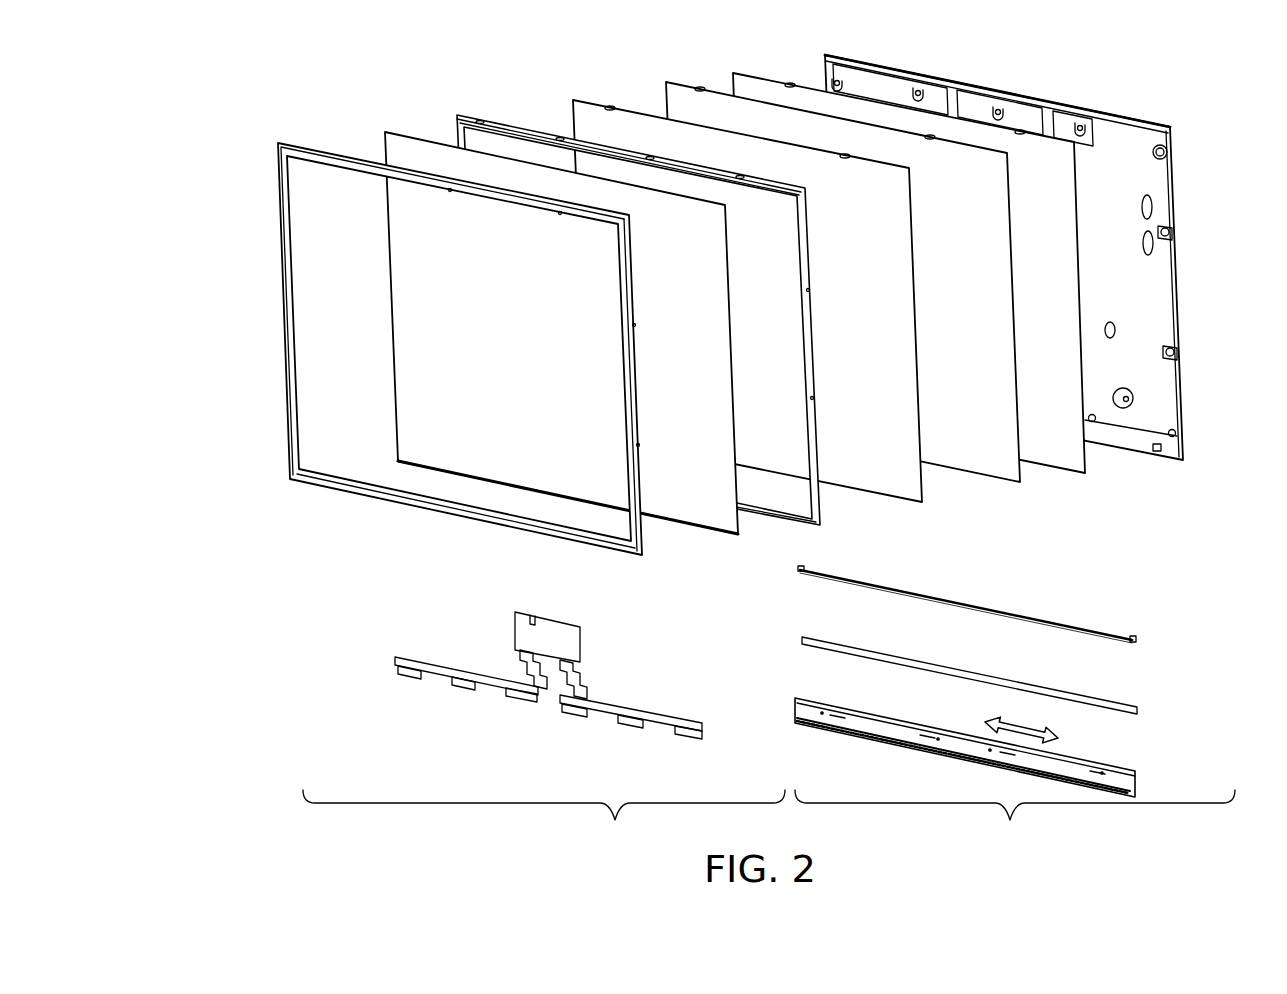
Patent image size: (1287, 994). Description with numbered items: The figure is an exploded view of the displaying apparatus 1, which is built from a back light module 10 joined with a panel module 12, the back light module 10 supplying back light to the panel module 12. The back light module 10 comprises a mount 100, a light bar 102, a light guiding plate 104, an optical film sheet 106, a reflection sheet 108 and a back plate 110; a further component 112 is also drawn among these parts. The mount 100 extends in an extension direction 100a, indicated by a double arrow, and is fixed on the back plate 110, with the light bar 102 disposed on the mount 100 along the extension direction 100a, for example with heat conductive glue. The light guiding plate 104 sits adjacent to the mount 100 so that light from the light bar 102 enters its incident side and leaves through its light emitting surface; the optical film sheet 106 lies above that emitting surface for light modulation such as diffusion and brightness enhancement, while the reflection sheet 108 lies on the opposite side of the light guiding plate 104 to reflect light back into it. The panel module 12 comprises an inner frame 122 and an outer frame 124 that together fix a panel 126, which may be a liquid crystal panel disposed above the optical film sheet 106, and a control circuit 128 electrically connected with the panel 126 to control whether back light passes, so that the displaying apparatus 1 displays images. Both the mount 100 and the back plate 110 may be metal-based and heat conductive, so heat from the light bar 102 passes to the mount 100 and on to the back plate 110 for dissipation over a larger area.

The displaying apparatus 1 is at (262, 120).
The back light module 10 is at (1015, 822).
The panel module 12 is at (544, 822).
The mount 100 is at (1118, 776).
The extension direction 100a is at (1025, 722).
The light bar 102 is at (1098, 632).
The light guiding plate 104 is at (975, 457).
The optical film sheet 106 is at (897, 468).
The reflection sheet 108 is at (1060, 445).
The back plate 110 is at (1140, 303).
The light bar holder 112 is at (1118, 696).
The inner frame 122 is at (763, 517).
The outer frame 124 is at (422, 507).
The panel 126 is at (698, 503).
The control circuit 128 is at (660, 712).